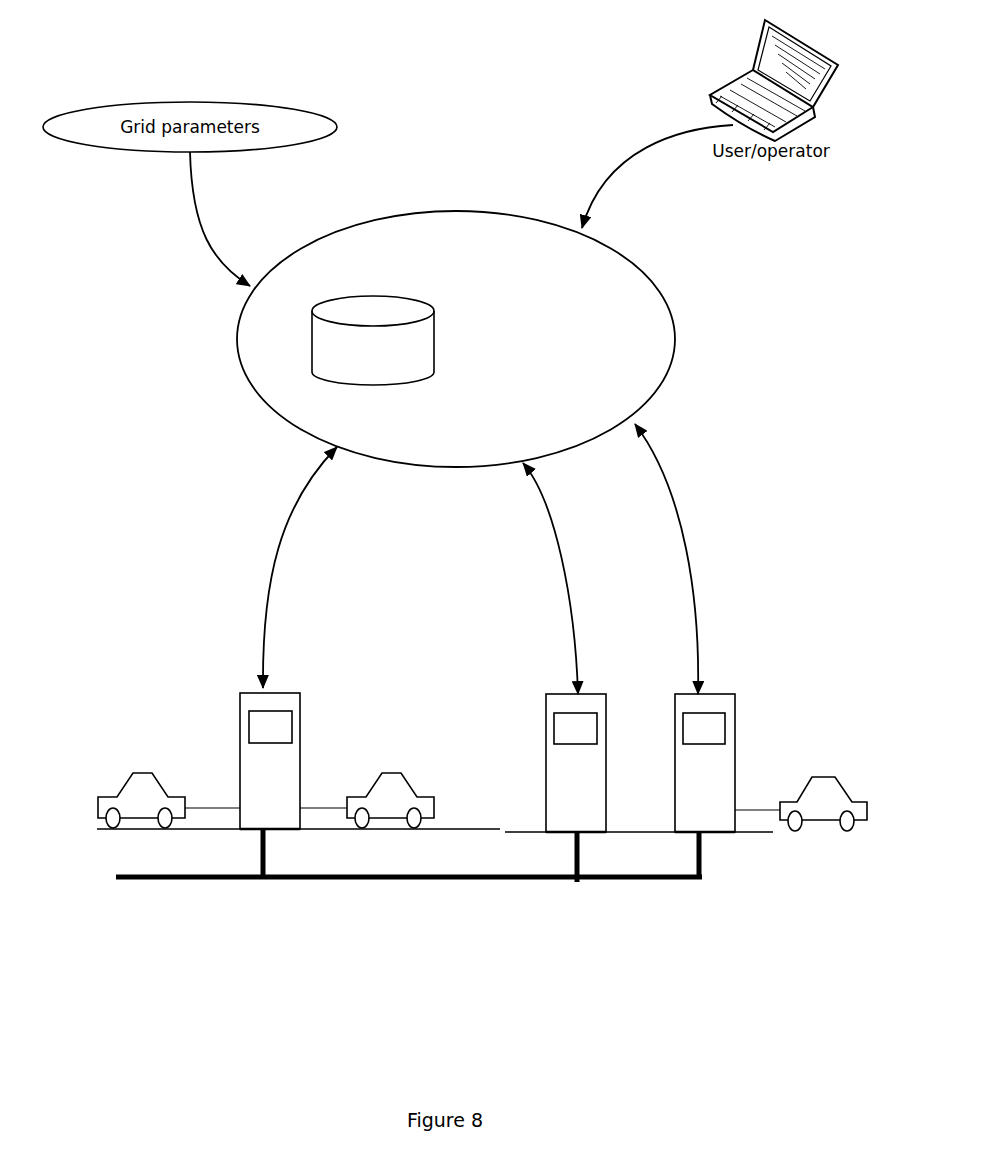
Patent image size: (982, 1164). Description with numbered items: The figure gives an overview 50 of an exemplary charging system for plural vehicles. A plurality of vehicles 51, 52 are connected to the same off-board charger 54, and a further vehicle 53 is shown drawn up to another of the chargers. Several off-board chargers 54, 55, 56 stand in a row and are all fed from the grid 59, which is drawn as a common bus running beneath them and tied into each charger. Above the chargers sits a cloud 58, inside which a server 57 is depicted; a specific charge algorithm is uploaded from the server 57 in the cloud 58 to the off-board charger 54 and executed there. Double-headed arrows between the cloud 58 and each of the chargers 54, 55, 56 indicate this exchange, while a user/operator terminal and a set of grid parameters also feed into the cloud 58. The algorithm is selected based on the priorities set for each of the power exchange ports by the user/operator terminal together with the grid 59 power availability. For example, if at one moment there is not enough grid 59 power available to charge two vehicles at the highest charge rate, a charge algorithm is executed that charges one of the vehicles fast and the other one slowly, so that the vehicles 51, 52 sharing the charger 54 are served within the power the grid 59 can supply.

The overview of a system 50 is at (260, 970).
The vehicle 51 is at (133, 772).
The vehicle 52 is at (392, 773).
The electric vehicle 53 is at (830, 775).
The off-board charger 54 is at (285, 692).
The charging station 55 is at (580, 693).
The charging station 56 is at (733, 692).
The server 57 is at (436, 338).
The cloud 58 is at (408, 248).
The grid 59 is at (360, 878).